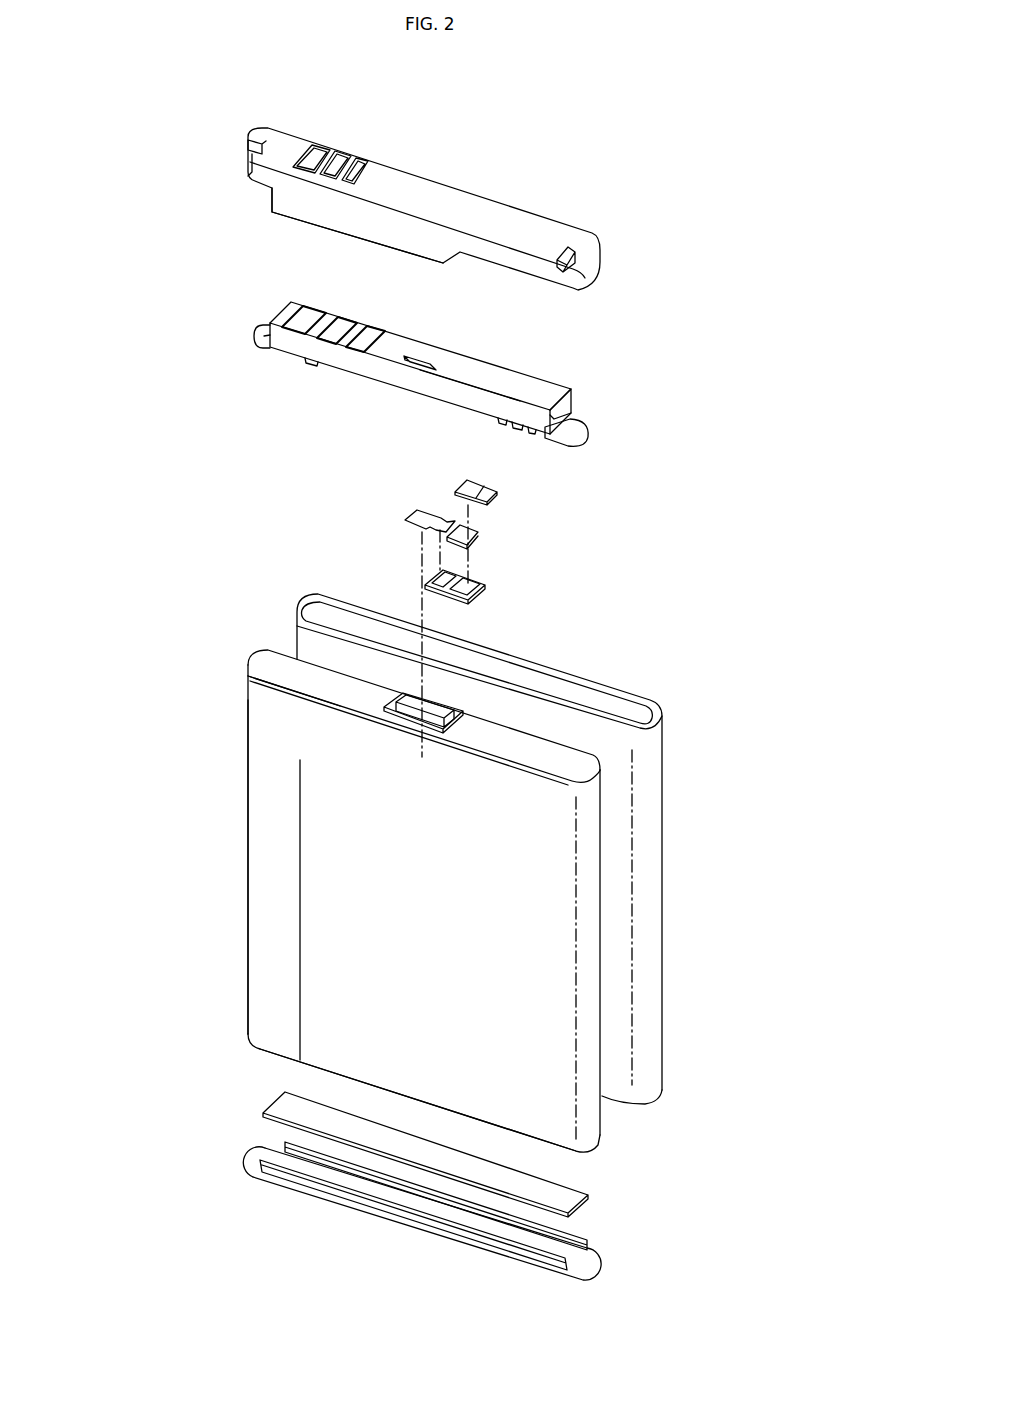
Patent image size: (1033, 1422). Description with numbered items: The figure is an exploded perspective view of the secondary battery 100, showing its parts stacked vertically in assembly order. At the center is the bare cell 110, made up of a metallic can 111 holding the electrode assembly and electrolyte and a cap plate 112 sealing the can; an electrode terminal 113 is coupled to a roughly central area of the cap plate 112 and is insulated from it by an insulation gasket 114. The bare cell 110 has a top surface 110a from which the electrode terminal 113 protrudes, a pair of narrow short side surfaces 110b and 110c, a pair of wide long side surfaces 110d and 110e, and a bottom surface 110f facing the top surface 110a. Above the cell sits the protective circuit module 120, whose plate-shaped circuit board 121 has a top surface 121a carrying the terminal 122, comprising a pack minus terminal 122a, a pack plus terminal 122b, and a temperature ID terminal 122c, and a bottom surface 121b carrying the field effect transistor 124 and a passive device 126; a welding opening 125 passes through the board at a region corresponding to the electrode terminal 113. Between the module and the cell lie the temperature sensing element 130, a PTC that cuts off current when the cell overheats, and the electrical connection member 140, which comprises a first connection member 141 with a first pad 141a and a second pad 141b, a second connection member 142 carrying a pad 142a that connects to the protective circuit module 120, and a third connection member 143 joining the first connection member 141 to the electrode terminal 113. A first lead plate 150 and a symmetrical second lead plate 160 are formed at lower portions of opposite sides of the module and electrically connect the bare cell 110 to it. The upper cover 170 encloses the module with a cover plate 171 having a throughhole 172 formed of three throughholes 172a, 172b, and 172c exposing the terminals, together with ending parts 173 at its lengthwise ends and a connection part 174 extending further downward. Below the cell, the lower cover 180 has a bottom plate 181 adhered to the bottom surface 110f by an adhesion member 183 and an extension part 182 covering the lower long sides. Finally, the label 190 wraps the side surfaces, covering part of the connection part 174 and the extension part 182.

The secondary battery 100 is at (662, 78).
The bare cell 110 is at (450, 844).
The top surface 110a is at (342, 698).
The short side surface 110b is at (247, 833).
The short side surface 110c is at (587, 962).
The long side surface 110d is at (298, 943).
The long side surface 110e is at (602, 1115).
The bottom surface 110f is at (592, 1152).
The can 111 is at (272, 997).
The cap plate 112 is at (288, 693).
The electrode terminal 113 is at (421, 656).
The insulation gasket 114 is at (390, 708).
The protective circuit module 120 is at (422, 346).
The circuit board 121 is at (295, 303).
The top surface of circuit board 121a is at (483, 370).
The bottom surface of circuit board 121b is at (542, 412).
The terminal 122 is at (356, 299).
The pack minus terminal 122a is at (315, 320).
The pack plus terminal 122b is at (388, 324).
The temperature ID terminal 122c is at (345, 323).
The field effect transistor 124 is at (308, 358).
The welding opening 125 is at (428, 360).
The passive device 126 is at (495, 420).
The temperature sensing element 130 is at (468, 530).
The electrical connection member 140 is at (455, 536).
The first connection member 141 is at (455, 596).
The first pad 141a is at (440, 580).
The second pad 141b is at (482, 595).
The second connection member 142 is at (472, 490).
The pad 142a is at (490, 488).
The third connection member 143 is at (418, 520).
The first lead plate 150 is at (257, 328).
The second lead plate 160 is at (577, 432).
The upper cover 170 is at (420, 164).
The cover plate 171 is at (523, 217).
The throughhole 172 is at (351, 111).
The throughhole 172a is at (325, 145).
The throughhole 172b is at (352, 153).
The throughhole 172c is at (377, 158).
The ending part 173 is at (248, 140).
The connection part 174 is at (280, 183).
The lower cover 180 is at (427, 1186).
The bottom plate 181 is at (258, 1152).
The extension part 182 is at (347, 1170).
The adhesion member 183 is at (582, 1207).
The label 190 is at (657, 828).